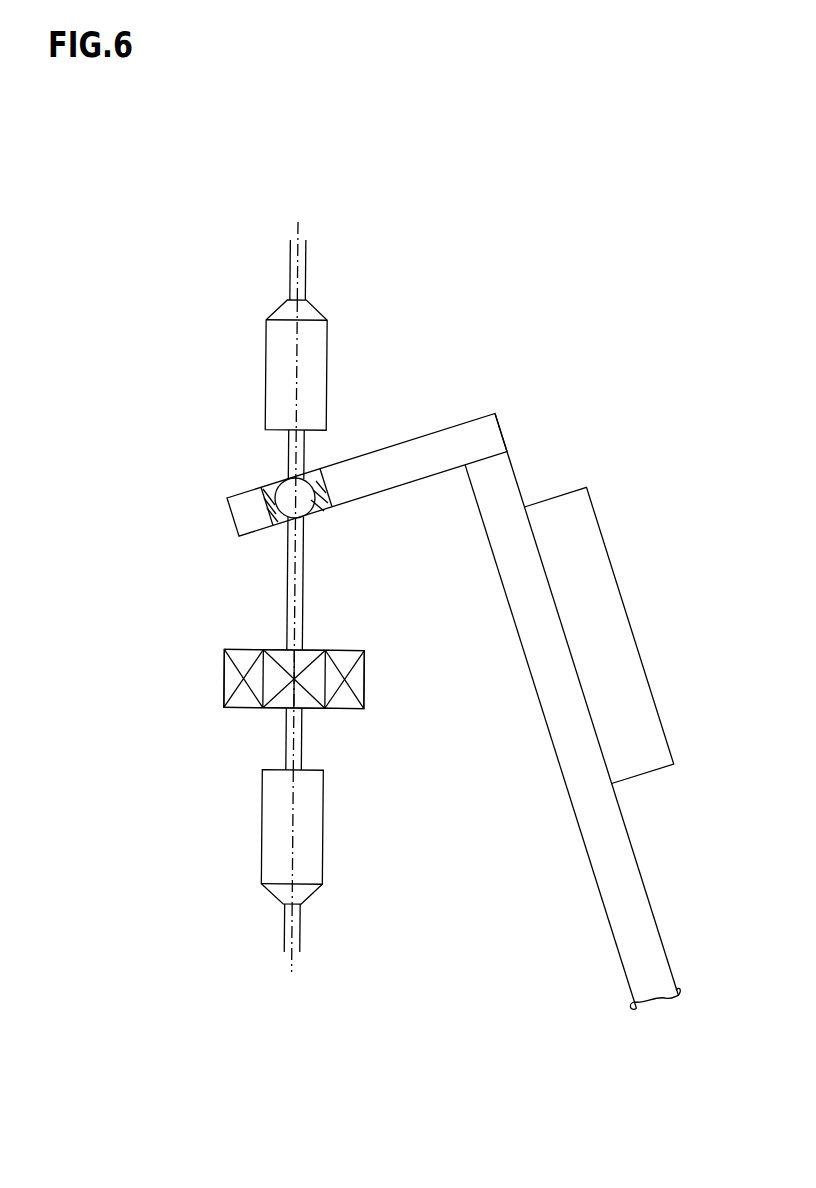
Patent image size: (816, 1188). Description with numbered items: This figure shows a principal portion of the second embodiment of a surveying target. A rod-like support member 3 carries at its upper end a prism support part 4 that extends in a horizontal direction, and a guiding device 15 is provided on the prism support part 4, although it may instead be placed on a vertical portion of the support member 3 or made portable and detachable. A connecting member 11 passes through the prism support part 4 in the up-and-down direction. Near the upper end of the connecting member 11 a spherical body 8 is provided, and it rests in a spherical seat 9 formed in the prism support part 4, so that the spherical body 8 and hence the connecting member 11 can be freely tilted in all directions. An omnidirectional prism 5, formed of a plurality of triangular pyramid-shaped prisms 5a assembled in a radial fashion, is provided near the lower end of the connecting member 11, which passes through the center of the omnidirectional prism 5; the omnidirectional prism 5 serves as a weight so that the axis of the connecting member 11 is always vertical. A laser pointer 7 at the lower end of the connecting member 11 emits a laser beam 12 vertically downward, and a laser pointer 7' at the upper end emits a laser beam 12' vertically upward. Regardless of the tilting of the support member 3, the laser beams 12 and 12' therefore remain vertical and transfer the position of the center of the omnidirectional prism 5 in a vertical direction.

The support member 3 is at (628, 843).
The prism support part 4 is at (433, 430).
The omnidirectional prism 5 is at (223, 673).
The triangular pyramid-shaped prisms 5a is at (363, 687).
The laser pointer 7 is at (334, 837).
The laser pointer 7' is at (242, 365).
The spherical body 8 is at (320, 512).
The spherical seat 9 is at (317, 463).
The connecting member 11 is at (286, 593).
The laser beam 12 is at (357, 938).
The laser beam 12' is at (363, 256).
The guiding device 15 is at (597, 525).